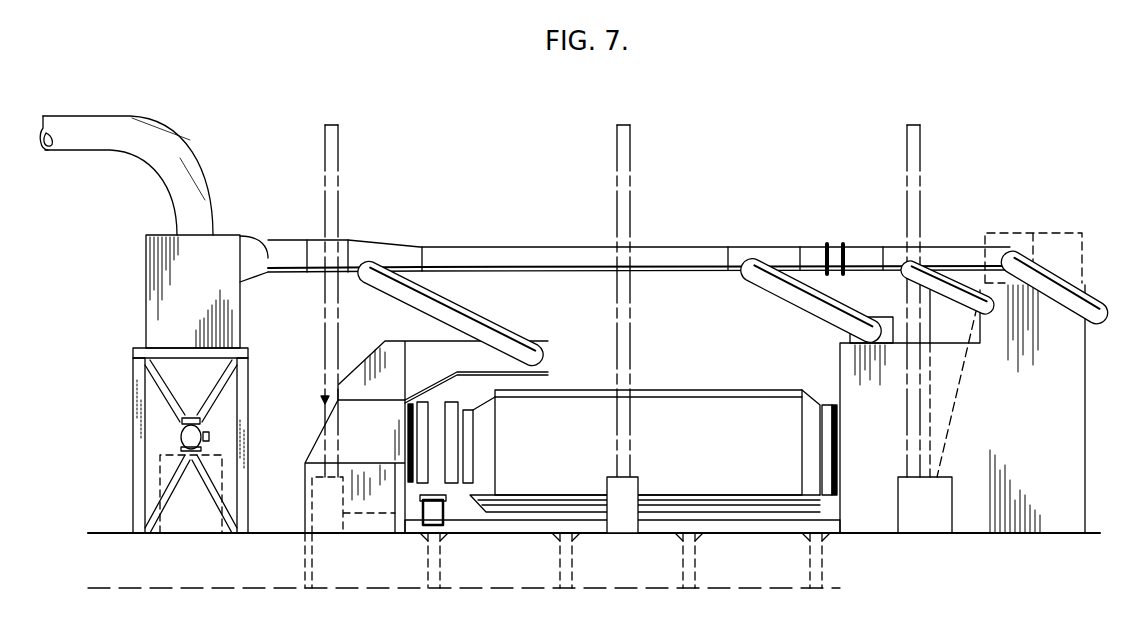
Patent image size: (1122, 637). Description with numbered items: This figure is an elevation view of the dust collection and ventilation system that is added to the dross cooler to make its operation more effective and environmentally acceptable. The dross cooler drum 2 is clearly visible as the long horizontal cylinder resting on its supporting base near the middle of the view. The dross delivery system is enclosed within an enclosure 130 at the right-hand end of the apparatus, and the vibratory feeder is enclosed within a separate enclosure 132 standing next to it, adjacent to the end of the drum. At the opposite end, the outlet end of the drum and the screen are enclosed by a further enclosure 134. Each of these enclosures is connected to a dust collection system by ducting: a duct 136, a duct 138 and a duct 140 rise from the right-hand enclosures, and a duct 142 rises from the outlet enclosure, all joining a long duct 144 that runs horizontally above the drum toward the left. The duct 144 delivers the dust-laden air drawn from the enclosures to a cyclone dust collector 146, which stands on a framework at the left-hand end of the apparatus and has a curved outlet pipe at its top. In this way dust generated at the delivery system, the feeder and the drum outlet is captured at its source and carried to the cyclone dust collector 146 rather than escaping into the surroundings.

The dross cooler drum 2 is at (668, 412).
The enclosure 130 is at (1030, 438).
The enclosure 132 is at (884, 441).
The enclosure 134 is at (382, 448).
The duct 136 is at (1090, 300).
The duct 138 is at (950, 285).
The duct 140 is at (775, 281).
The duct 142 is at (448, 298).
The duct 144 is at (291, 240).
The cyclone dust collector 146 is at (207, 295).